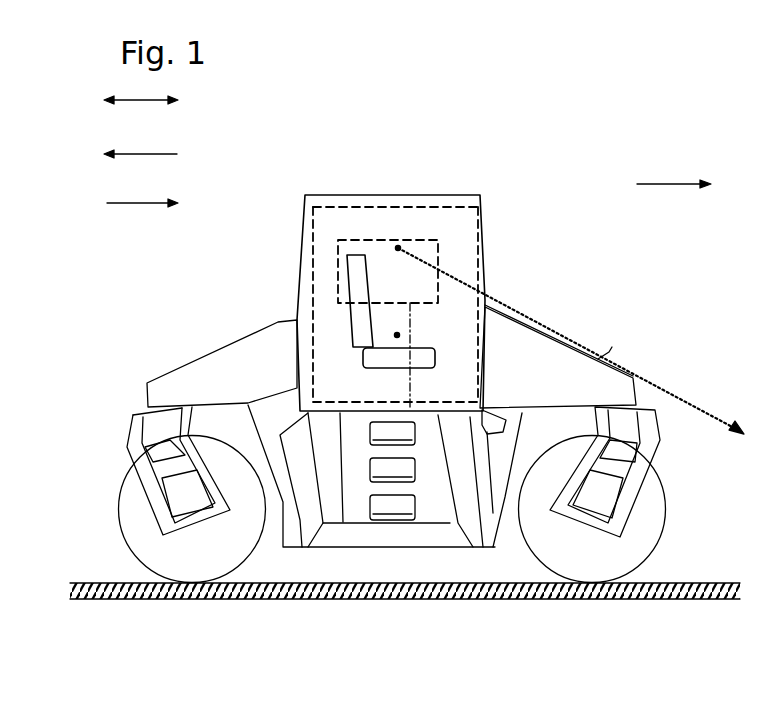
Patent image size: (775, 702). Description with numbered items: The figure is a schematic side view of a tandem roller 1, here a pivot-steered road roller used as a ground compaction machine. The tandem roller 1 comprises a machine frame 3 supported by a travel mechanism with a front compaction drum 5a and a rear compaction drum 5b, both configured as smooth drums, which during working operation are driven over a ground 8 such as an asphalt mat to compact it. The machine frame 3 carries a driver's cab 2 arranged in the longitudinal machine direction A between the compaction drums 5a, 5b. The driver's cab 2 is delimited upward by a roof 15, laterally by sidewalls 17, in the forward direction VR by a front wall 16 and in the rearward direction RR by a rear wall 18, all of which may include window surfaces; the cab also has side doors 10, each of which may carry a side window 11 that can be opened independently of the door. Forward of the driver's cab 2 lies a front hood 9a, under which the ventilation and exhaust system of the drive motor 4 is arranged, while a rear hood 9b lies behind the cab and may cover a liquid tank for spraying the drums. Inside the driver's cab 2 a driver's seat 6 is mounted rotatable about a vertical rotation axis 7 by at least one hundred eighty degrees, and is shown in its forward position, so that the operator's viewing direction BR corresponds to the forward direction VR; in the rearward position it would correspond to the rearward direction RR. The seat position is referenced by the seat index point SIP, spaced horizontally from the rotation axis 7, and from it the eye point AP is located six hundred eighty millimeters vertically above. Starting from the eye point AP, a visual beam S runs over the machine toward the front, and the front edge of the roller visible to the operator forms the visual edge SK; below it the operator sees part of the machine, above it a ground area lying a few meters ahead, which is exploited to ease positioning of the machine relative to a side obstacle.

The tandem roller 1 is at (538, 178).
The driver's cab 2 is at (330, 220).
The machine frame 3 is at (185, 378).
The drive motor 4 is at (573, 365).
The front compaction drum 5a is at (172, 565).
The rear compaction drum 5b is at (608, 562).
The driver's seat 6 is at (357, 302).
The rotation axis 7 is at (410, 398).
The ground 8 is at (303, 588).
The front hood 9a is at (530, 358).
The rear hood 9b is at (238, 360).
The side door 10 is at (430, 400).
The side window 11 is at (430, 237).
The roof 15 is at (457, 193).
The front wall 16 is at (297, 290).
The sidewall 17 is at (318, 233).
The rear wall 18 is at (483, 250).
The eye point AP is at (398, 247).
The seat index point SIP is at (400, 334).
The visual beam S is at (693, 408).
The visual edge SK is at (635, 372).
The longitudinal machine direction A is at (129, 100).
The rearward direction RR is at (121, 154).
The forward direction VR is at (122, 203).
The viewing direction BR is at (654, 185).